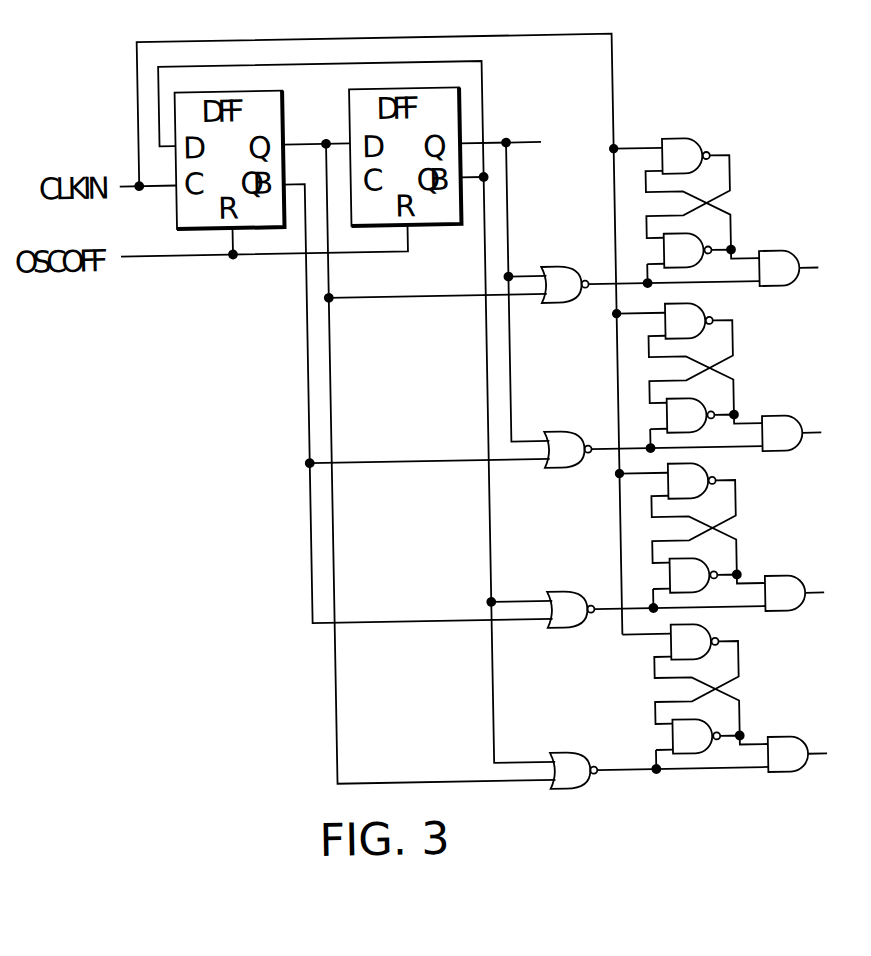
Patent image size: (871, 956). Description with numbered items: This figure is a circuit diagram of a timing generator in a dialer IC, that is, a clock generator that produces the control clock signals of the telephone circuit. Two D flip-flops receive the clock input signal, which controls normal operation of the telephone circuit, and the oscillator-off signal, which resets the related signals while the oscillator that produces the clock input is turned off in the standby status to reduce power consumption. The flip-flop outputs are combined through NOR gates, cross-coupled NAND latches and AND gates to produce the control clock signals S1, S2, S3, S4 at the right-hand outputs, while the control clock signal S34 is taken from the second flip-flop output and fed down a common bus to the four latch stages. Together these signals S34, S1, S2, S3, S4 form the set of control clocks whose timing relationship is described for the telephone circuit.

The control clock signal S34 is at (585, 140).
The control clock signal S1 is at (700, 219).
The control clock signal S2 is at (703, 384).
The control clock signal S3 is at (706, 544).
The control clock signal S4 is at (709, 705).